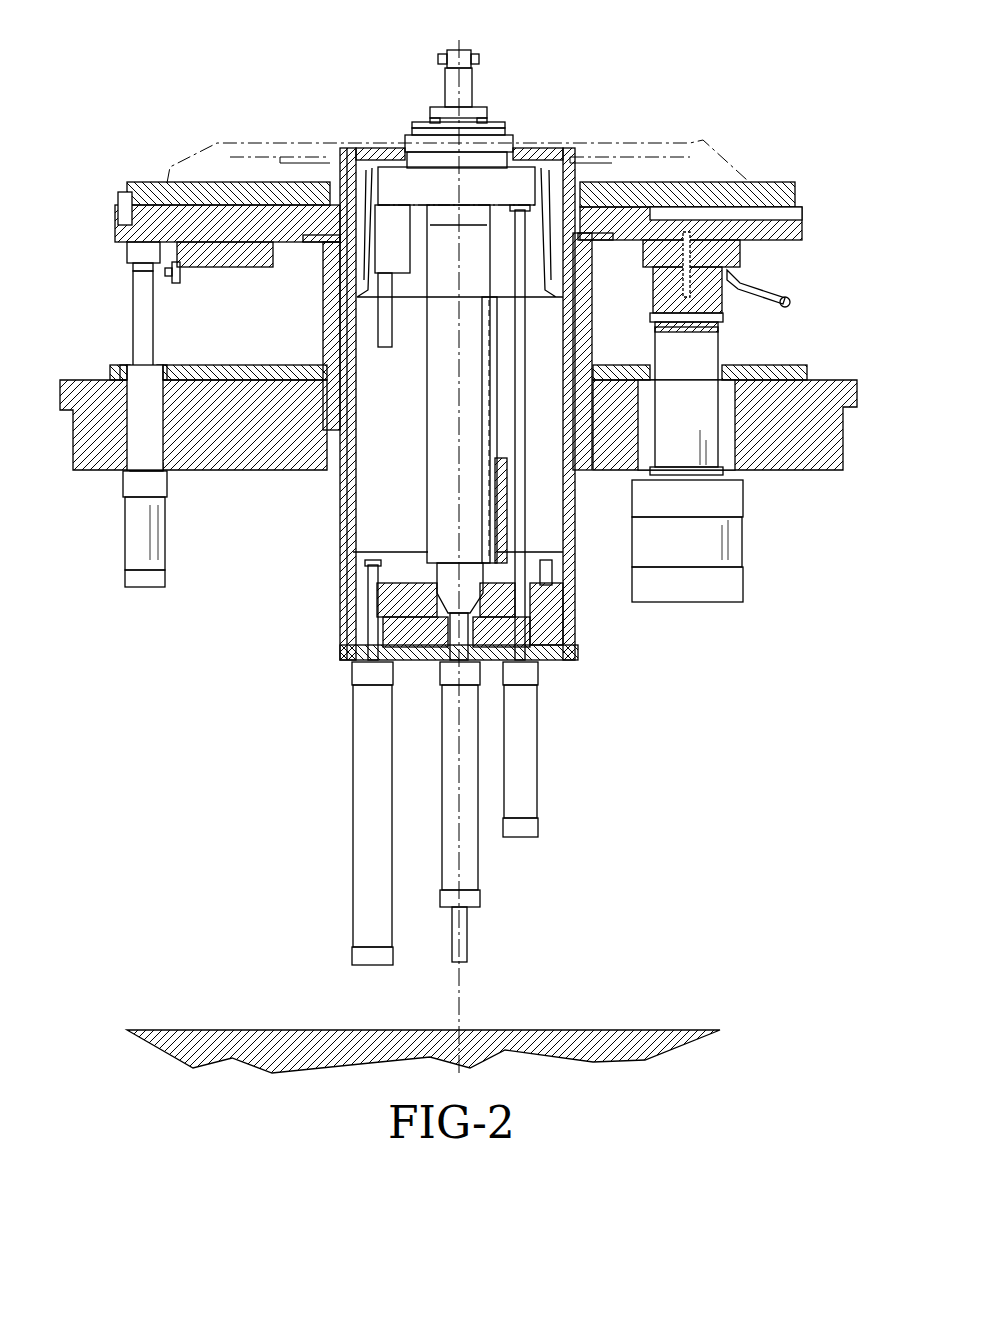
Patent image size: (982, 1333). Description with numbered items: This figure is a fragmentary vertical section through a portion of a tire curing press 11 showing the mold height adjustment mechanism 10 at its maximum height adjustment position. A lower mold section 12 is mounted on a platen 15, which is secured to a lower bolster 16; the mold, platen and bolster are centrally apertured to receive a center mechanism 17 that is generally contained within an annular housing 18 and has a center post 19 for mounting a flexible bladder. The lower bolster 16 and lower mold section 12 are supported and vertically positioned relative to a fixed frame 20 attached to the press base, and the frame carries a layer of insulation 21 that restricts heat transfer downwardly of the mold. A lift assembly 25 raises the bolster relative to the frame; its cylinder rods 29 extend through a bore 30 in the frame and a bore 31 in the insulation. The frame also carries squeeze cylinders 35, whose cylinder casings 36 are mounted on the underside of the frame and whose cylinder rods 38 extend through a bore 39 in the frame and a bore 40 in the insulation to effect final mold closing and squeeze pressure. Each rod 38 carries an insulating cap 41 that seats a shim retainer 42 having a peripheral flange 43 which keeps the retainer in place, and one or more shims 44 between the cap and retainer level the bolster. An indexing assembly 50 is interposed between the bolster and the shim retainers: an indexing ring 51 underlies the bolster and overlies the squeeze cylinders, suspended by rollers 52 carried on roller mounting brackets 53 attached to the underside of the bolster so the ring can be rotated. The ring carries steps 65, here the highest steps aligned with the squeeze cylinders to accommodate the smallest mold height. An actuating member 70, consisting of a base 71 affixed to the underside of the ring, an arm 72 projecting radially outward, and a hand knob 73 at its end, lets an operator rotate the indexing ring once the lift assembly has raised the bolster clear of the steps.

The mold height adjustment mechanism 10 is at (815, 270).
The press 11 is at (547, 128).
The lower mold section 12 is at (615, 140).
The platen 15 is at (797, 190).
The lower bolster 16 is at (800, 228).
The center mechanism 17 is at (487, 100).
The annular housing 18 is at (590, 430).
The center post 19 is at (452, 92).
The frame 20 is at (840, 435).
The layer of insulation 21 is at (803, 372).
The lift assembly 25 is at (125, 540).
The cylinder rods 29 is at (143, 337).
The bore 30 is at (160, 435).
The bore 31 is at (160, 372).
The squeeze cylinders 35 is at (745, 555).
The cylinder casings 36 is at (712, 598).
The cylinder rods 38 is at (690, 425).
The bore 39 is at (735, 440).
The bore 40 is at (600, 405).
The insulating cap 41 is at (665, 335).
The shim retainer 42 is at (660, 316).
The peripheral flange 43 is at (722, 334).
The shim 44 is at (689, 333).
The indexing assembly 50 is at (270, 268).
The indexing ring 51 is at (200, 258).
The rollers 52 is at (180, 283).
The roller mounting brackets 53 is at (172, 280).
The steps 65 is at (670, 298).
The actuating member 70 is at (797, 301).
The base 71 is at (740, 280).
The arm 72 is at (768, 300).
The hand knob 73 is at (790, 303).